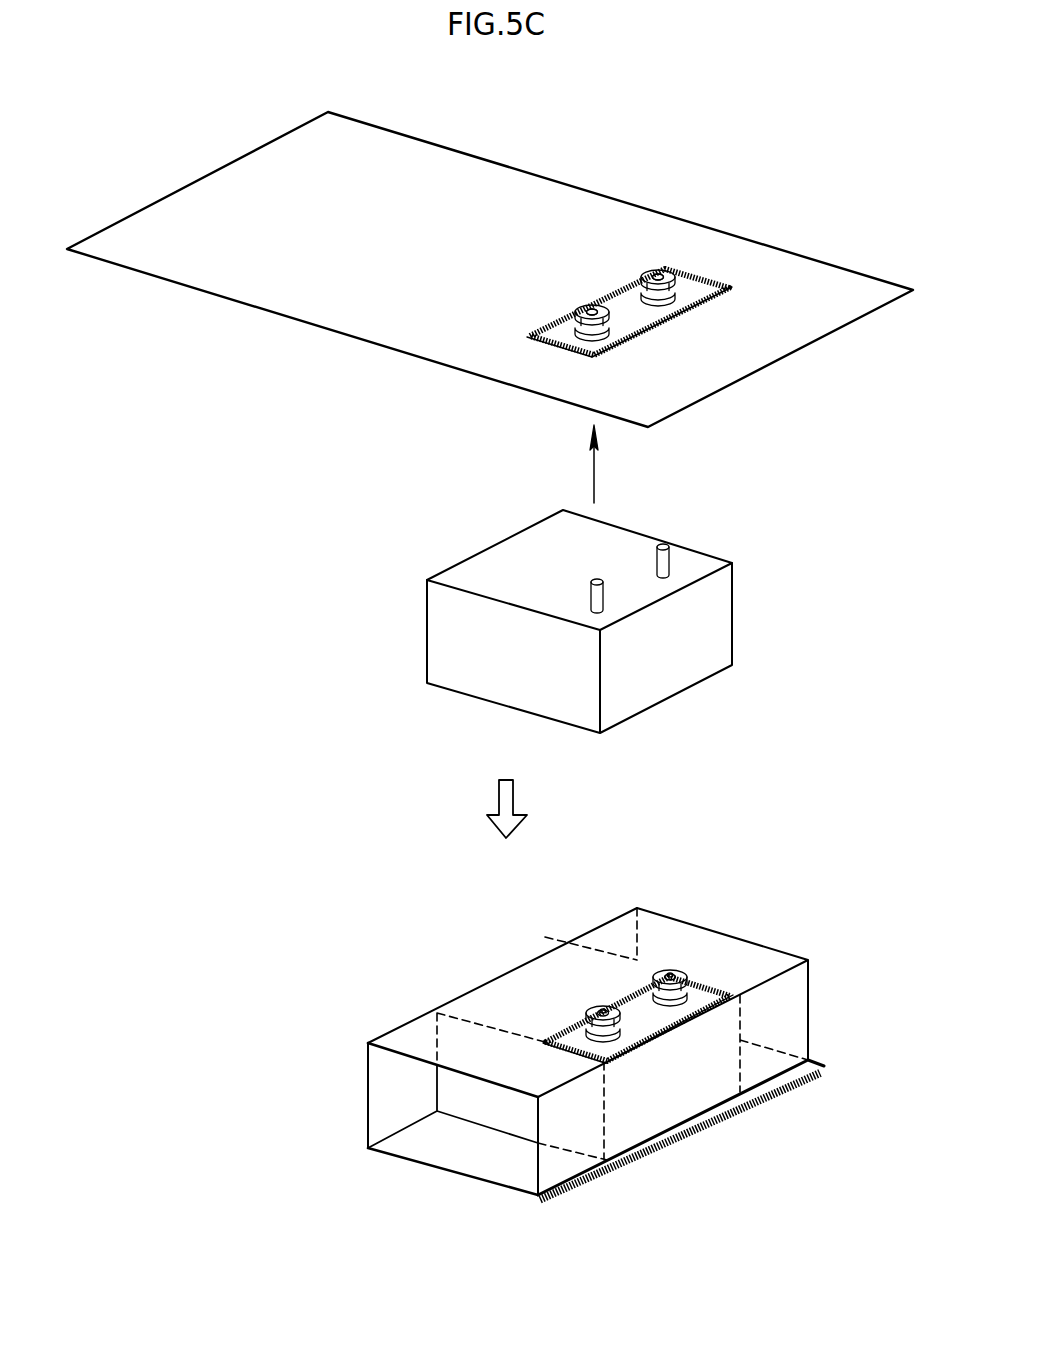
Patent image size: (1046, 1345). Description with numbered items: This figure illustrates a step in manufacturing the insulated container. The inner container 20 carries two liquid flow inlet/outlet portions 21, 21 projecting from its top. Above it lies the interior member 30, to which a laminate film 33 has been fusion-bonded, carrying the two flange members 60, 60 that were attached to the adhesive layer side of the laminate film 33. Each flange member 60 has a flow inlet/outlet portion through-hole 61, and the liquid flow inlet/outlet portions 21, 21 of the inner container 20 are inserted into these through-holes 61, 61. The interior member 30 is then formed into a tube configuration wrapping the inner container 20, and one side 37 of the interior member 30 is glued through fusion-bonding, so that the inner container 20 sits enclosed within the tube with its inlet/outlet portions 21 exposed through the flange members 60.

The inner container 20 is at (443, 629).
The liquid flow inlet/outlet portion 21 is at (665, 568).
The interior member 30 is at (537, 196).
The laminate film 33 is at (628, 312).
The one side of the interior member 37 is at (643, 1160).
The flange member 60 is at (660, 270).
The flow inlet/outlet portion through-hole 61 is at (662, 272).